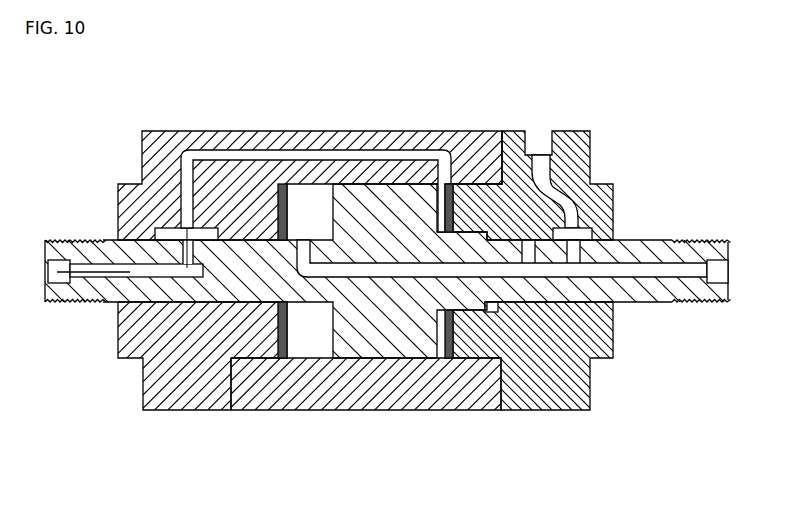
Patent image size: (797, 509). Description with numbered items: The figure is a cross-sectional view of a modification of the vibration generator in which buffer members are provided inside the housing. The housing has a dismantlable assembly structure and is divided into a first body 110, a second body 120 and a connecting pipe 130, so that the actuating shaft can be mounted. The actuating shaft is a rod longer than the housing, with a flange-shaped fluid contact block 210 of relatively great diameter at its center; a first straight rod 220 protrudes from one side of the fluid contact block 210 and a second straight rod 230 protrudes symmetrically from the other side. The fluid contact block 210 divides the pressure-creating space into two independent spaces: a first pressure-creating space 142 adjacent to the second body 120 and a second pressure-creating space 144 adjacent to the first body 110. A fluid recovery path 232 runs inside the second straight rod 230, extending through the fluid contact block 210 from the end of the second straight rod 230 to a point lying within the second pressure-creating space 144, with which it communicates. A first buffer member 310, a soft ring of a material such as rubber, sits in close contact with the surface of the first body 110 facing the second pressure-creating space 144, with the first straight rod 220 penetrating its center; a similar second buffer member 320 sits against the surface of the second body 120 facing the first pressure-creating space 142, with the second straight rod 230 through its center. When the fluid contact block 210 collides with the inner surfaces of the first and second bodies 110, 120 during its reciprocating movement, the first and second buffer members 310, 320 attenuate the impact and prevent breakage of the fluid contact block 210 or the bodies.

The first body 110 is at (168, 131).
The second body 120 is at (586, 131).
The connecting pipe 130 is at (462, 145).
The first pressure-creating space 142 is at (440, 218).
The second pressure-creating space 144 is at (283, 214).
The fluid contact block 210 is at (372, 216).
The first straight rod 220 is at (103, 238).
The second straight rod 230 is at (650, 300).
The fluid recovery path 232 is at (388, 276).
The first buffer member 310 is at (287, 350).
The second buffer member 320 is at (437, 360).